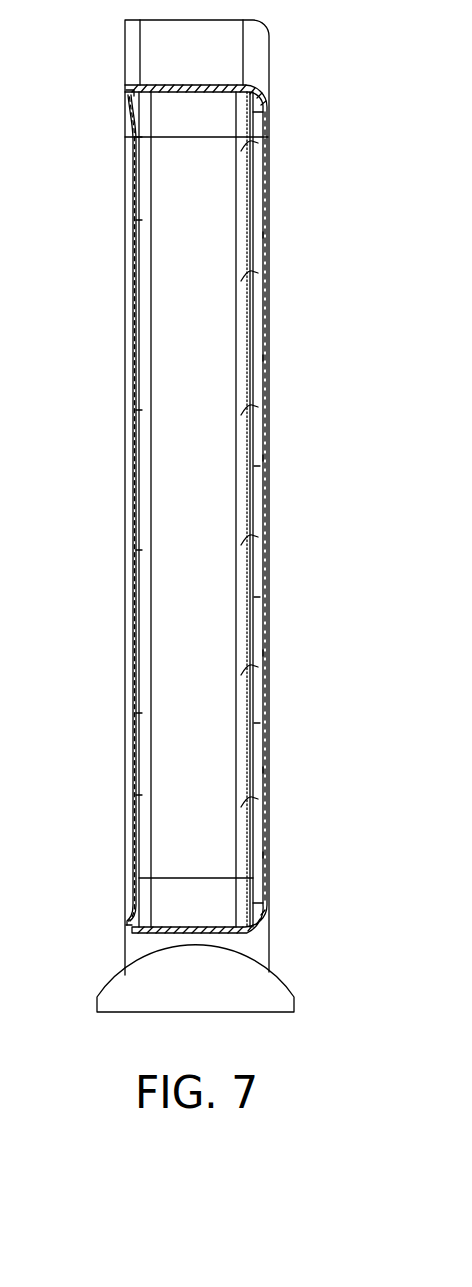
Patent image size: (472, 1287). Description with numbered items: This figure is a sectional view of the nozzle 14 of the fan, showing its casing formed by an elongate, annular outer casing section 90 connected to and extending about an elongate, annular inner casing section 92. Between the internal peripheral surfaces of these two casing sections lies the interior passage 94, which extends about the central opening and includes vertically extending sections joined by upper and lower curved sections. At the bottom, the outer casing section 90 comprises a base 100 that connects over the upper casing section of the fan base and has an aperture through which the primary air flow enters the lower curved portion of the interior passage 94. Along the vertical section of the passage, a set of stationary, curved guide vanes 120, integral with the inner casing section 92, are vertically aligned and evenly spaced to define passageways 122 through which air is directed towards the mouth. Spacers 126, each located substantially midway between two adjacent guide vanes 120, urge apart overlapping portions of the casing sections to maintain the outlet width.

The nozzle 14 is at (108, 692).
The outer casing section 90 is at (268, 718).
The inner casing section 92 is at (150, 946).
The interior passage 94 is at (185, 408).
The base 100 is at (277, 1000).
The guide vanes 120 is at (260, 145).
The passageways 122 is at (262, 855).
The spacers 126 is at (260, 467).